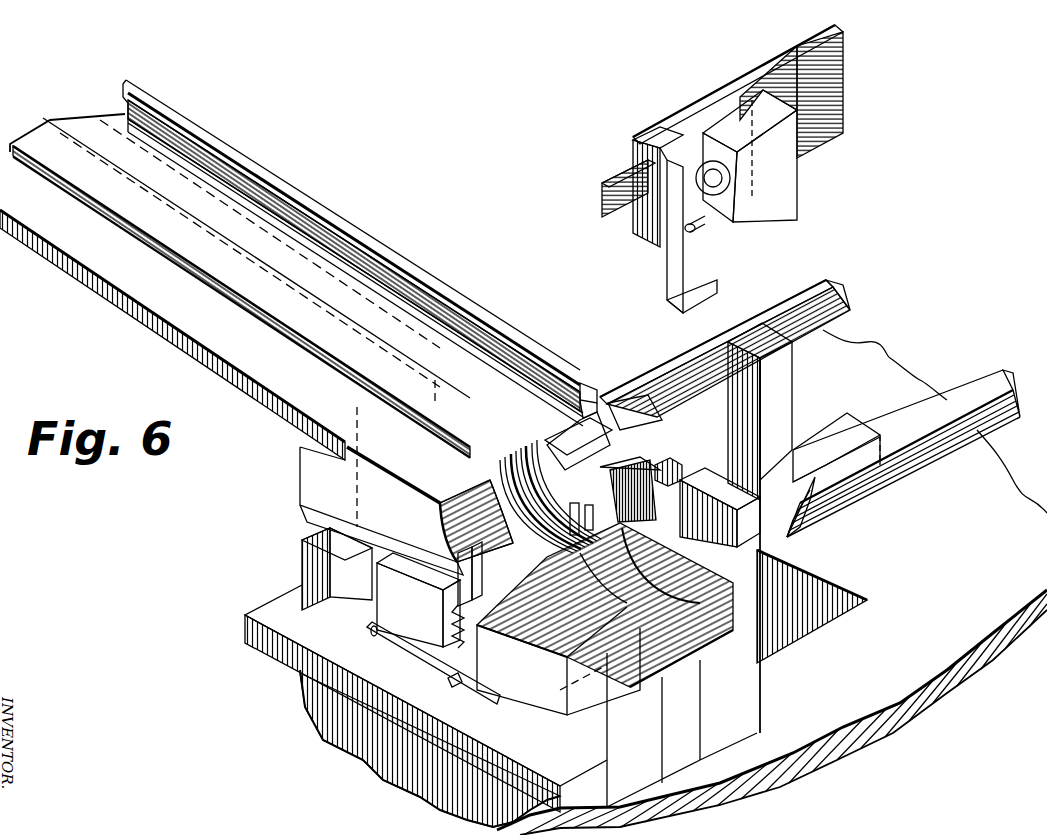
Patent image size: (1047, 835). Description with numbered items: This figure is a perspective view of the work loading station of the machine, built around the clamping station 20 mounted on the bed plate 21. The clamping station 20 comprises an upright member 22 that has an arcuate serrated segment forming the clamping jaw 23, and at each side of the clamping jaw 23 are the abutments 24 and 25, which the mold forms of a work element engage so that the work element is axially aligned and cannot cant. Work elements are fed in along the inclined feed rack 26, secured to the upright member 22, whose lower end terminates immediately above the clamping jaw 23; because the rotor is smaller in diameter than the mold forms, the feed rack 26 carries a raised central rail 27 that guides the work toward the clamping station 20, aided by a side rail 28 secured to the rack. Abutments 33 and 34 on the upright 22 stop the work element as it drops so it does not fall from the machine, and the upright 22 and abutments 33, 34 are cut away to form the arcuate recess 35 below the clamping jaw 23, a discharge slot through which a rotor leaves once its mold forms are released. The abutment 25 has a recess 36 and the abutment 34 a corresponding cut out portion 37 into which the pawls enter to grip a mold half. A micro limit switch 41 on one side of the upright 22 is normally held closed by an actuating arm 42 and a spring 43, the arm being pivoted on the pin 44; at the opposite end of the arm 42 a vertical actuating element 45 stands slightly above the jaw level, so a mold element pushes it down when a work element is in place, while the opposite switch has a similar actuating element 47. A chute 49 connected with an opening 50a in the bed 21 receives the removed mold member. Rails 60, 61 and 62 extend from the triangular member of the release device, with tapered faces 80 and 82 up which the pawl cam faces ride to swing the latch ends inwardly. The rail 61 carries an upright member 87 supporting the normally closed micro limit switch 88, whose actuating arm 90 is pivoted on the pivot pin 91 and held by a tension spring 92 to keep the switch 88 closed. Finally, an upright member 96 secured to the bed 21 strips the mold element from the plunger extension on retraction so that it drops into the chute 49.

The clamping station 20 is at (495, 480).
The bed plate 21 is at (868, 696).
The upright member 22 is at (300, 565).
The clamping jaw 23 is at (517, 447).
The abutment 24 is at (452, 530).
The abutment 25 is at (568, 466).
The inclined feed rack 26 is at (97, 258).
The raised rail 27 is at (327, 337).
The side rail 28 is at (370, 250).
The abutment 33 is at (604, 688).
The abutment 34 is at (708, 480).
The arcuate recess 35 is at (663, 617).
The recess 36 is at (614, 474).
The cut out portion 37 is at (650, 494).
The micro limit switch 41 is at (400, 597).
The actuating arm 42 is at (423, 676).
The spring 43 is at (452, 684).
The pin 44 is at (372, 648).
The vertical actuating element 45 is at (464, 570).
The actuating element 47 is at (573, 508).
The chute 49 is at (787, 597).
The opening 50a is at (852, 597).
The rail 60 is at (650, 383).
The rail 61 is at (612, 182).
The rail 62 is at (918, 455).
The tapered face 80 is at (641, 418).
The tapered face 82 is at (800, 522).
The upright member 87 is at (770, 72).
The micro limit switch 88 is at (788, 177).
The actuating arm 90 is at (668, 262).
The pivot pin 91 is at (686, 163).
The tension spring 92 is at (701, 229).
The upright member 96 is at (790, 396).